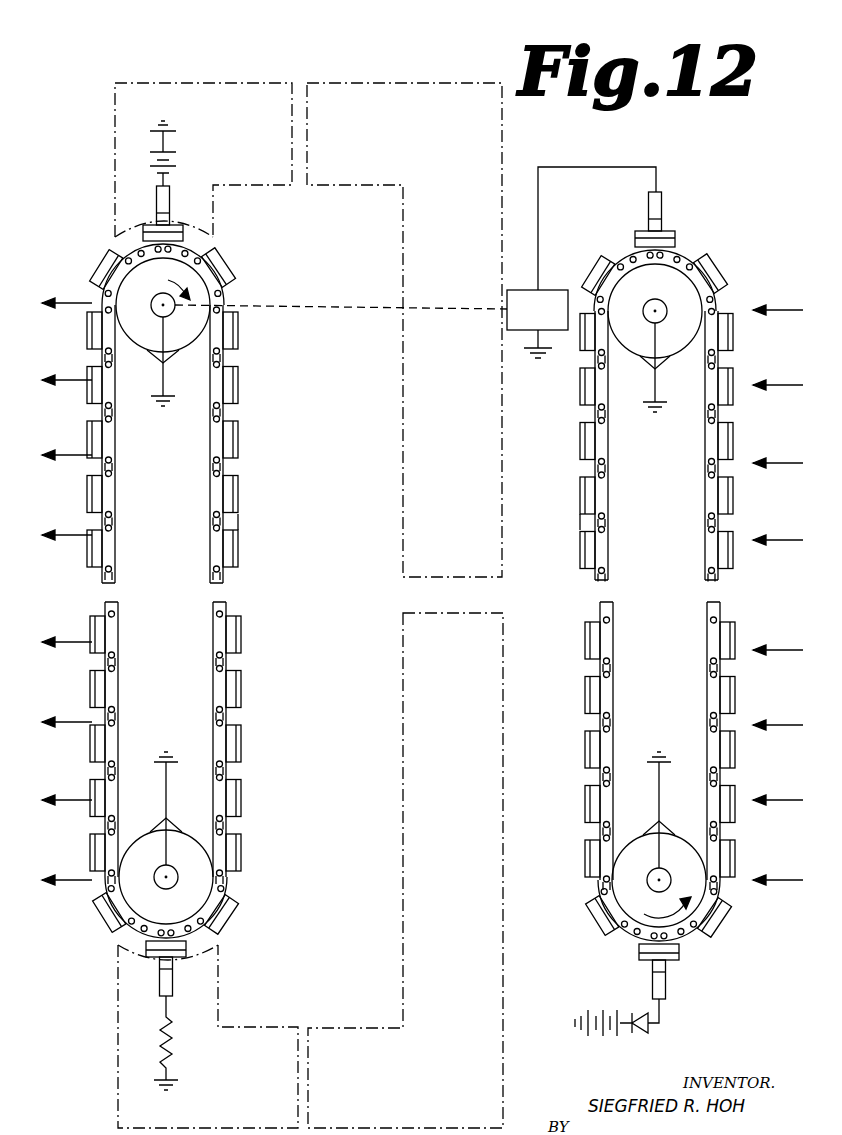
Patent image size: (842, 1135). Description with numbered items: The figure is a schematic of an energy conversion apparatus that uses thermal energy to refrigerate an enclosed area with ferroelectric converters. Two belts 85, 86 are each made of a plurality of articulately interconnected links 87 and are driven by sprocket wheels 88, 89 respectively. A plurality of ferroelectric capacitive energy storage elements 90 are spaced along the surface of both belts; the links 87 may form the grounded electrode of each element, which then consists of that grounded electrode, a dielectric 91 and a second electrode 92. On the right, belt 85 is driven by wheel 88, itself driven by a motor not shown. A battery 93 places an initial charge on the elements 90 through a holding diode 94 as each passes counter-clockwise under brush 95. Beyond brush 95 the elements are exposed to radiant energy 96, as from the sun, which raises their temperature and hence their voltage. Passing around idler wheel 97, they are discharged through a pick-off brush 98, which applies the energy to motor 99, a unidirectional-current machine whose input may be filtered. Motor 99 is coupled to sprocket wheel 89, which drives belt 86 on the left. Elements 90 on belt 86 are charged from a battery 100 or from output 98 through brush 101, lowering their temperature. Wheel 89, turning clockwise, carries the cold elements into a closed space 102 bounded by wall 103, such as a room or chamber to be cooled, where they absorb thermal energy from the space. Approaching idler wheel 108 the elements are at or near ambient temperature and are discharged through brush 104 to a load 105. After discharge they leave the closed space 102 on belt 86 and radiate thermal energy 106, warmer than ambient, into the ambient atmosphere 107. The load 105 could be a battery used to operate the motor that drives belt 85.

The belt 85 is at (703, 623).
The belt 86 is at (208, 622).
The links 87 is at (112, 466).
The sprocket wheel 88 is at (666, 838).
The sprocket wheel 89 is at (187, 350).
The ferroelectric capacitive energy storage elements 90 is at (239, 432).
The dielectric 91 is at (239, 521).
The second electrode 92 is at (233, 576).
The battery 93 is at (619, 1010).
The holding diode 94 is at (640, 1033).
The brush 95 is at (668, 977).
The radiant energy 96 is at (765, 385).
The idler wheel 97 is at (679, 346).
The pick-off brush 98 is at (662, 211).
The motor 99 is at (541, 292).
The battery 100 is at (176, 166).
The brush 101 is at (169, 207).
The closed space 102 is at (333, 858).
The wall 103 is at (410, 226).
The brush 104 is at (160, 985).
The load 105 is at (173, 1040).
The thermal energy 106 is at (63, 535).
The ambient atmosphere 107 is at (171, 605).
The idler wheel 108 is at (182, 830).